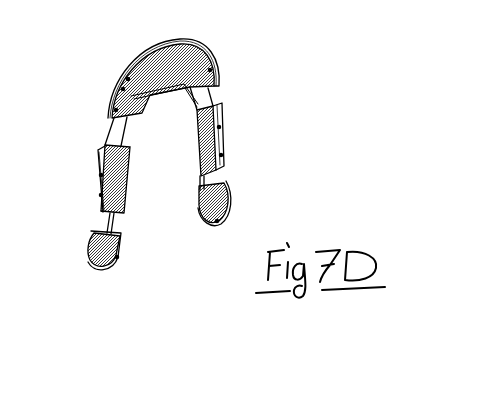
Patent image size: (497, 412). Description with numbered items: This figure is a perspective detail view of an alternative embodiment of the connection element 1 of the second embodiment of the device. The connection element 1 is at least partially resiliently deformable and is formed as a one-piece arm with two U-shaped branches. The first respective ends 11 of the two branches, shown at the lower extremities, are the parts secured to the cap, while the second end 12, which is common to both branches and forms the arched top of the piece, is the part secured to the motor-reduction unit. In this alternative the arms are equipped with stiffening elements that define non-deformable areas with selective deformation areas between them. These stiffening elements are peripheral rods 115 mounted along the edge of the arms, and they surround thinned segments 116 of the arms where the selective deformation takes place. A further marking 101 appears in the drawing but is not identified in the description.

The connection element 1 is at (223, 150).
The first respective ends 11 is at (92, 246).
The second end 12 is at (167, 48).
The connecting rod 101 is at (213, 185).
The peripheral rods 115 is at (105, 148).
The thinned segments 116 is at (197, 200).